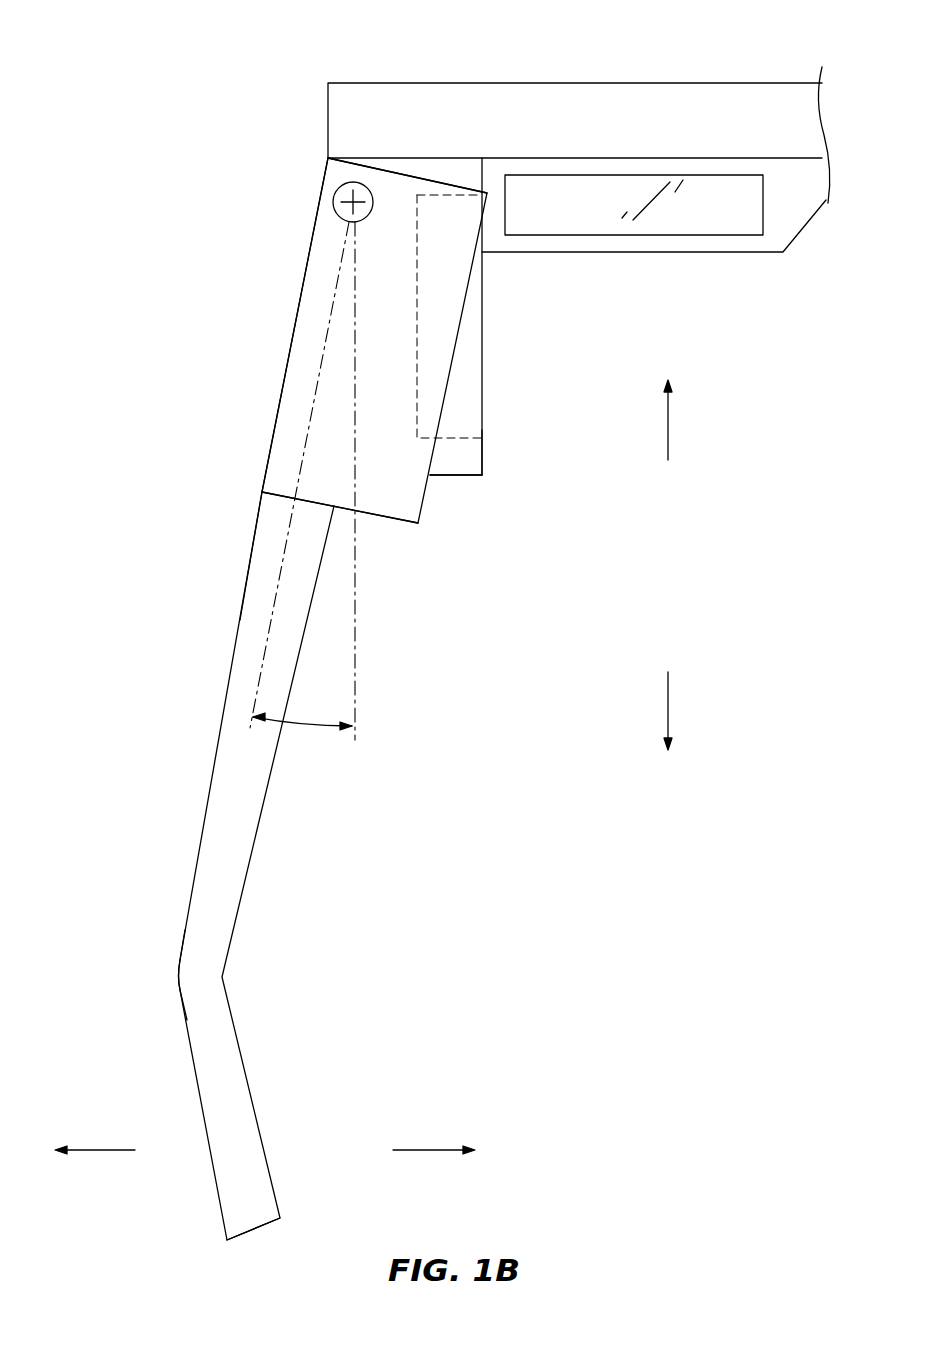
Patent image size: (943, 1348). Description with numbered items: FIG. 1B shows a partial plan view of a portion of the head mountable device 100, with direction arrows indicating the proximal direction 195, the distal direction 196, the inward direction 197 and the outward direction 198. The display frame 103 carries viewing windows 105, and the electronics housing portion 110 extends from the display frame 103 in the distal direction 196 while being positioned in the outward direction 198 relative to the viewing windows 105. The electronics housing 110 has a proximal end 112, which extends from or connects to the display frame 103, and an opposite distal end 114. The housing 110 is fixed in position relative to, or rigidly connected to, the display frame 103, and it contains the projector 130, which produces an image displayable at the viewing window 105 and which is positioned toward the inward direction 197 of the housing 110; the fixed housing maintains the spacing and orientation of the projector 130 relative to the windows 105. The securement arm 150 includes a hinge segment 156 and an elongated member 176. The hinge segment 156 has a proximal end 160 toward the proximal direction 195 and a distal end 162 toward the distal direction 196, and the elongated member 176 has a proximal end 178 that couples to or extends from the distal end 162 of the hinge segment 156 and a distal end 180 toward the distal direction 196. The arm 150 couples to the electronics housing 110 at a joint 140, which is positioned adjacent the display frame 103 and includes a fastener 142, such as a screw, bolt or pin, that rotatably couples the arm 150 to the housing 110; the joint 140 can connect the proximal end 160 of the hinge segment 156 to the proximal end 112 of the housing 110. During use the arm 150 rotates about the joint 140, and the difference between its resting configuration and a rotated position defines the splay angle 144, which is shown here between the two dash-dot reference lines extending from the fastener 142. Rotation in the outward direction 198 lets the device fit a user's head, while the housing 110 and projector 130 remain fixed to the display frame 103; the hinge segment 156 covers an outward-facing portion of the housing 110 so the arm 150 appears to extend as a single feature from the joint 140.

The head mountable device 100 is at (464, 656).
The display frame 103 is at (729, 78).
The viewing windows 105 is at (733, 230).
The electronics housing portion 110 is at (484, 479).
The proximal end 112 is at (455, 170).
The distal end 114 is at (452, 463).
The projector 130 is at (462, 407).
The joint 140 is at (374, 181).
The fastener 142 is at (345, 198).
The splay angle 144 is at (302, 723).
The securement arms 150 is at (222, 670).
The hinge segment 156 is at (287, 423).
The proximal end 160 is at (317, 210).
The distal end 162 is at (262, 478).
The elongated member 176 is at (205, 910).
The proximal end 178 is at (249, 555).
The distal end 180 is at (220, 1213).
The proximal direction 195 is at (668, 445).
The distal direction 196 is at (670, 687).
The inward direction 197 is at (432, 1152).
The outward direction 198 is at (102, 1152).